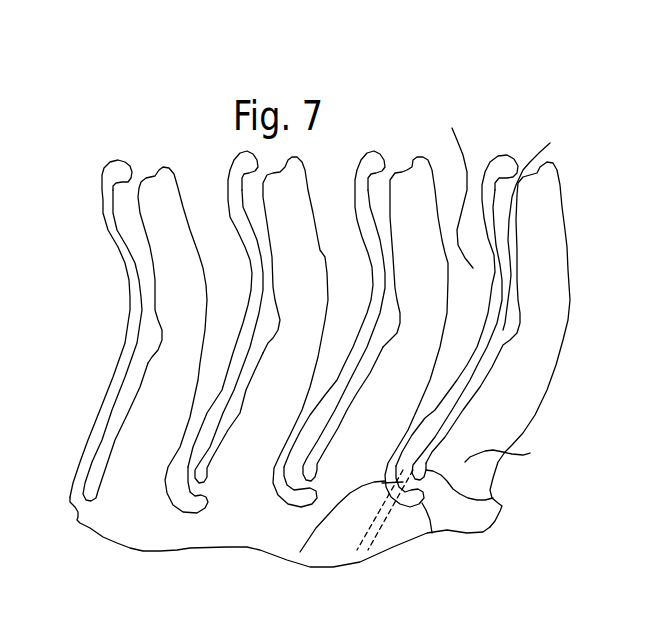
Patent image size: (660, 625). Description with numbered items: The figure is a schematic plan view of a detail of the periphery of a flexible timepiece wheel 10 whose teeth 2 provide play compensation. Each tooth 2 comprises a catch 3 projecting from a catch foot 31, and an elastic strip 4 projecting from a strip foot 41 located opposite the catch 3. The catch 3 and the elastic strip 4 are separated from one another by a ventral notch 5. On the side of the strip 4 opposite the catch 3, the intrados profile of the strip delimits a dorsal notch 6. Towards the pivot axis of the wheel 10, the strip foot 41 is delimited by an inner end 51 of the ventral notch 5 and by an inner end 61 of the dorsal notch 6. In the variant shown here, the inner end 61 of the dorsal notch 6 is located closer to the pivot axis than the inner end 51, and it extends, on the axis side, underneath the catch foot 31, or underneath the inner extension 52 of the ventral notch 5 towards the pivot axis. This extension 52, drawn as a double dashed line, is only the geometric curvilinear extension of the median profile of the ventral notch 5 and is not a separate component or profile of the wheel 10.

The tooth 2 is at (137, 169).
The catch 3 is at (573, 168).
The elastic strip 4 is at (502, 141).
The ventral notch 5 is at (550, 143).
The dorsal notch 6 is at (456, 187).
The timepiece wheel 10 is at (614, 242).
The catch foot 31 is at (530, 453).
The strip foot 41 is at (300, 552).
The inner end of ventral notch 51 is at (493, 498).
The inner extension of ventral notch 52 is at (378, 522).
The inner end of dorsal notch 61 is at (432, 533).